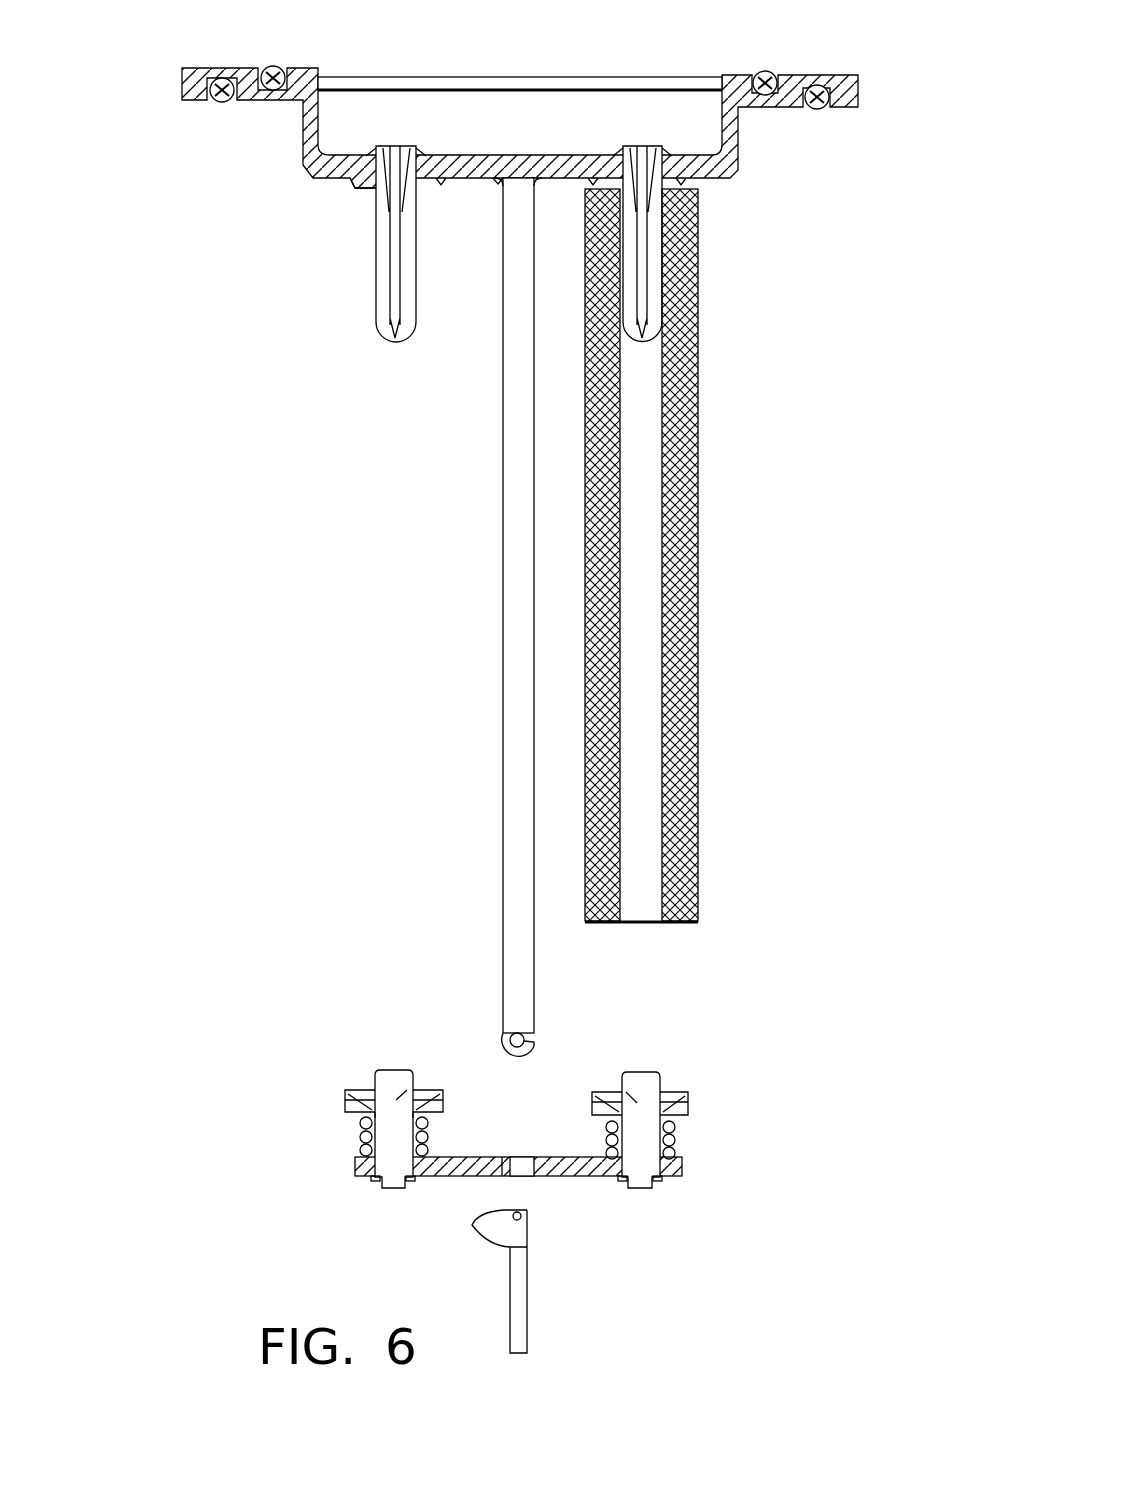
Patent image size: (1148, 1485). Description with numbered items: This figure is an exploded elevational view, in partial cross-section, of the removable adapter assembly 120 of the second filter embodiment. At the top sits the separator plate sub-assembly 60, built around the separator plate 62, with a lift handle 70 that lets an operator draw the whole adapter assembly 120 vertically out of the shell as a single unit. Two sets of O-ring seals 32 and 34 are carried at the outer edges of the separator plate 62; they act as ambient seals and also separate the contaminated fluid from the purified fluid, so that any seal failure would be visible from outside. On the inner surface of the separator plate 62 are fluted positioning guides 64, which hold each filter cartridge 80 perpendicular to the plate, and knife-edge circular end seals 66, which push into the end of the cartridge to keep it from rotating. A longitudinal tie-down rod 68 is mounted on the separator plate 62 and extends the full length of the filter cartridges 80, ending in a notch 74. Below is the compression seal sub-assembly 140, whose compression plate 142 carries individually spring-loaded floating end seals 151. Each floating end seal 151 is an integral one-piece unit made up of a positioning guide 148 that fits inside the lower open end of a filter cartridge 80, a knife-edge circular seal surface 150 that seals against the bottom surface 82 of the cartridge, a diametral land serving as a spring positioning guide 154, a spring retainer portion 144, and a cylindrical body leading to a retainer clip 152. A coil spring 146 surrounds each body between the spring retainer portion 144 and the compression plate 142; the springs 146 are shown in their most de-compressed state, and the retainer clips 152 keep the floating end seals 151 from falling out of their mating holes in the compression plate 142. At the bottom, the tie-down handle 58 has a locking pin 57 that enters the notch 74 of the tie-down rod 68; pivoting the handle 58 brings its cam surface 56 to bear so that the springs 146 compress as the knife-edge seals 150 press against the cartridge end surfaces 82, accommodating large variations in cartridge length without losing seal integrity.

The O-ring seal 32 is at (280, 66).
The O-ring seal 34 is at (222, 104).
The cam surface 56 is at (490, 1241).
The locking pin 57 is at (522, 1217).
The tie-down handle 58 is at (522, 1307).
The separator plate sub-assembly 60 is at (622, 72).
The separator plate 62 is at (728, 163).
The positioning guide 64 is at (384, 271).
The circular end seal 66 is at (363, 190).
The tie-down rod 68 is at (512, 662).
The lift handle 70 is at (442, 82).
The notch 74 is at (535, 1038).
The filter cartridge 80 is at (700, 600).
The bottom surface of filter cartridge 82 is at (682, 922).
The removable adapter assembly 120 is at (270, 634).
The compression seal sub-assembly 140 is at (712, 1208).
The compression plate 142 is at (447, 1170).
The spring retainer portion 144 is at (434, 1111).
The coil spring 146 is at (360, 1138).
The positioning guide 148 is at (390, 1085).
The knife-edge circular seal surface 150 is at (436, 1092).
The floating end seal 151 is at (411, 1089).
The retainer clip 152 is at (660, 1189).
The spring positioning guide 154 is at (377, 1117).